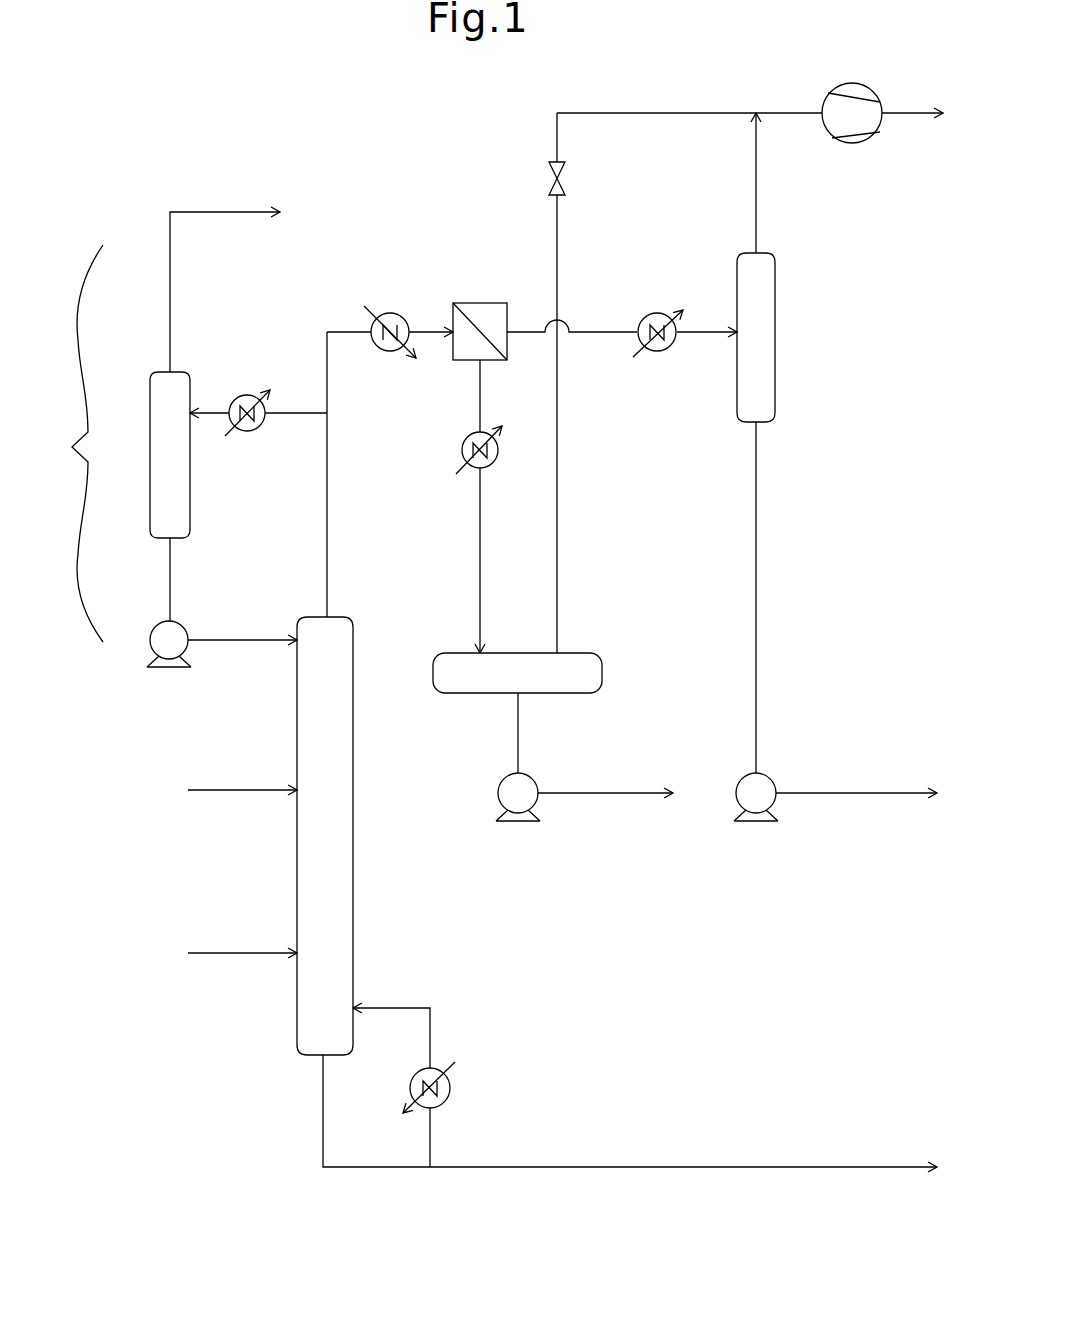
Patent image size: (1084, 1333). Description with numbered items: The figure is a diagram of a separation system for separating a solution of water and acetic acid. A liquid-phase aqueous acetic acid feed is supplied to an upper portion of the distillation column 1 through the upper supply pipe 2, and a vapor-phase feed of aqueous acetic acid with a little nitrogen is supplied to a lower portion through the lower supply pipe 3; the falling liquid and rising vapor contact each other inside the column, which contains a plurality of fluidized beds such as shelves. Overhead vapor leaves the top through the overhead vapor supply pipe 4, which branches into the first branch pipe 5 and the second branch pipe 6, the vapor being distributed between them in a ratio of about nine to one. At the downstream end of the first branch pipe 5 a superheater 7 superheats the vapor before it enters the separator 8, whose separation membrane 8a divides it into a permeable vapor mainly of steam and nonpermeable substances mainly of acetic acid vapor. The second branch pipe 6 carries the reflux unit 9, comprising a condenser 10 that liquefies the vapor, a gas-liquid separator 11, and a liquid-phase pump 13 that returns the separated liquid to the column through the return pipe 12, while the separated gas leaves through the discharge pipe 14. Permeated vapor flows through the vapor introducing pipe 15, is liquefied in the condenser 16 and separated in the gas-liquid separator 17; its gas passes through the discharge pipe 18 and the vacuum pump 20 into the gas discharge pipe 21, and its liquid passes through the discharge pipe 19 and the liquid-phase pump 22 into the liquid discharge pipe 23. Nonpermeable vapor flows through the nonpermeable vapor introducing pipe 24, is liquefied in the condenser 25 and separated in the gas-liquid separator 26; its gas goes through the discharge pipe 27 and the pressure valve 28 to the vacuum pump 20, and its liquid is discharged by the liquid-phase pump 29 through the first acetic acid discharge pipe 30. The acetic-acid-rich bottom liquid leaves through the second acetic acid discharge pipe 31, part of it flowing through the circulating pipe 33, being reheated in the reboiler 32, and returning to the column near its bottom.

The distillation column 1 is at (352, 943).
The upper supply pipe 2 is at (210, 790).
The lower supply pipe 3 is at (240, 953).
The overhead vapor supply pipe 4 is at (327, 565).
The first branch pipe 5 is at (340, 331).
The second branch pipe 6 is at (299, 415).
The superheater 7 is at (392, 313).
The separator 8 is at (483, 303).
The separation membrane 8a is at (453, 360).
The reflux unit 9 is at (74, 443).
The condenser 10 is at (247, 395).
The gas-liquid separator 11 is at (150, 458).
The return pipe 12 is at (240, 638).
The liquid-phase pump 13 is at (155, 628).
The discharge pipe 14 is at (172, 333).
The vapor introducing pipe 15 is at (598, 330).
The condenser 16 is at (668, 352).
The gas-liquid separator 17 is at (776, 316).
The discharge pipe 18 is at (756, 184).
The discharge pipe 19 is at (756, 553).
The vacuum pump 20 is at (828, 97).
The gas discharge pipe 21 is at (903, 118).
The liquid-phase pump 22 is at (760, 815).
The liquid discharge pipe 23 is at (823, 796).
The nonpermeable vapor introducing pipe 24 is at (478, 402).
The condenser 25 is at (463, 461).
The gas-liquid separator 26 is at (490, 695).
The discharge pipe 27 is at (557, 548).
The pressure valve 28 is at (563, 168).
The liquid-phase pump 29 is at (522, 815).
The first acetic acid discharge pipe 30 is at (598, 795).
The second acetic acid discharge pipe 31 is at (650, 1170).
The reboiler 32 is at (451, 1088).
The circulating pipe 33 is at (432, 1045).